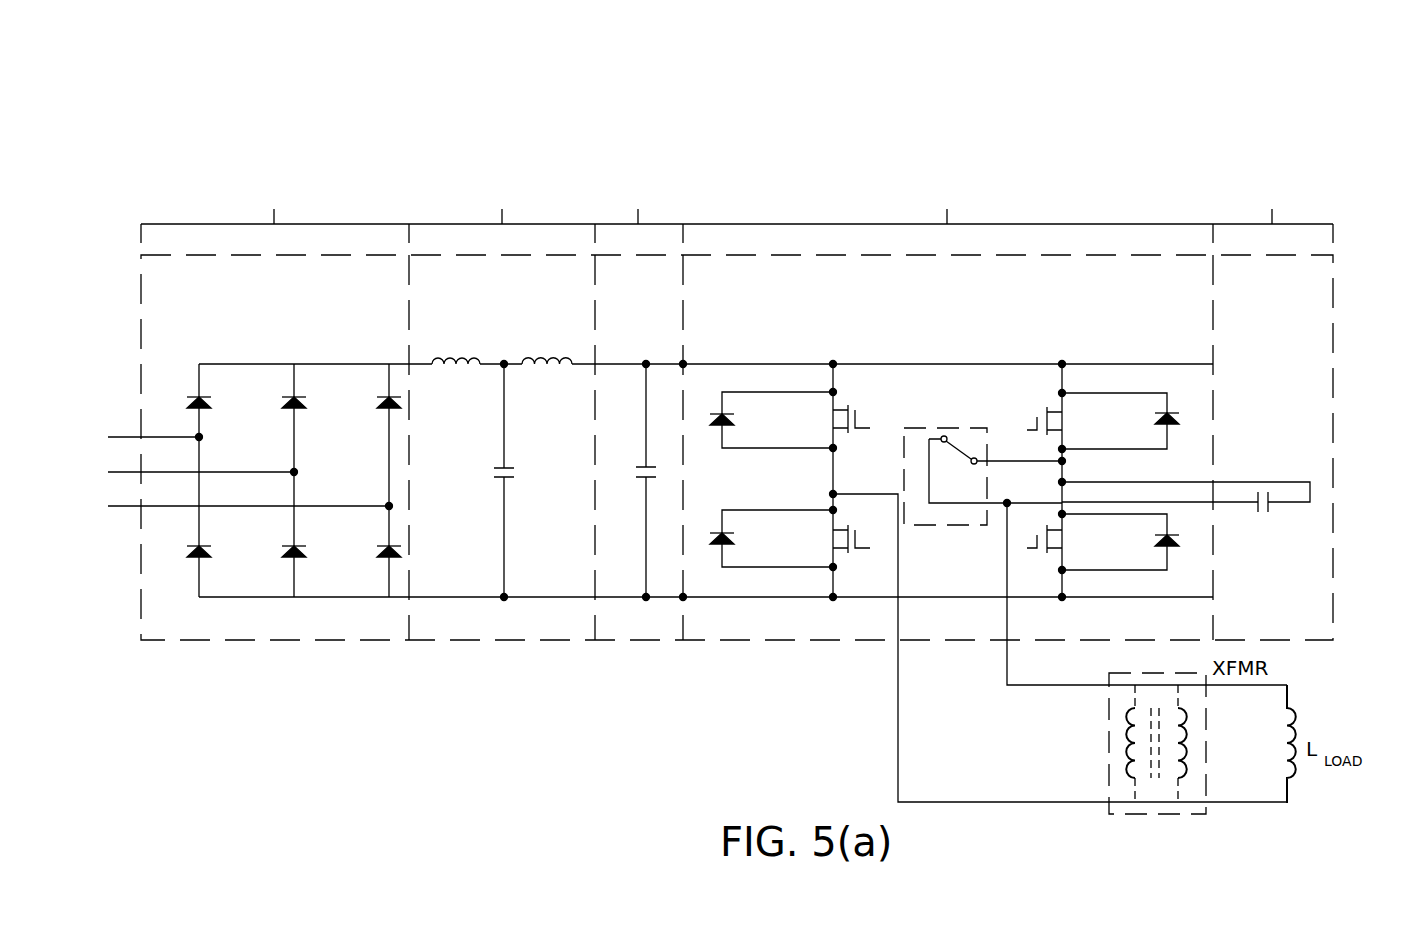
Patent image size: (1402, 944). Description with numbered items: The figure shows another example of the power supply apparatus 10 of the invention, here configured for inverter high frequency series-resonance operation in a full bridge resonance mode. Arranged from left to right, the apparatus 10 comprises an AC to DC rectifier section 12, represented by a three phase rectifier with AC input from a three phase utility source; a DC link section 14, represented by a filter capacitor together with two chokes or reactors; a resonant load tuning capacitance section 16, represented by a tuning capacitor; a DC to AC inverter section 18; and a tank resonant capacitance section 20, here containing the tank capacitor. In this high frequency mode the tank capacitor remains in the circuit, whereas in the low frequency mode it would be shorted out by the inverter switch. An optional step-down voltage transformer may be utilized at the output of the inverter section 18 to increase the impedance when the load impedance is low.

The apparatus 10 is at (924, 89).
The AC to DC rectifier section 12 is at (297, 390).
The DC (link) section 14 is at (557, 392).
The resonant load tuning capacitance section 16 is at (616, 392).
The DC to AC inverter section 18 is at (984, 493).
The tank (resonant) capacitance section 20 is at (1185, 364).